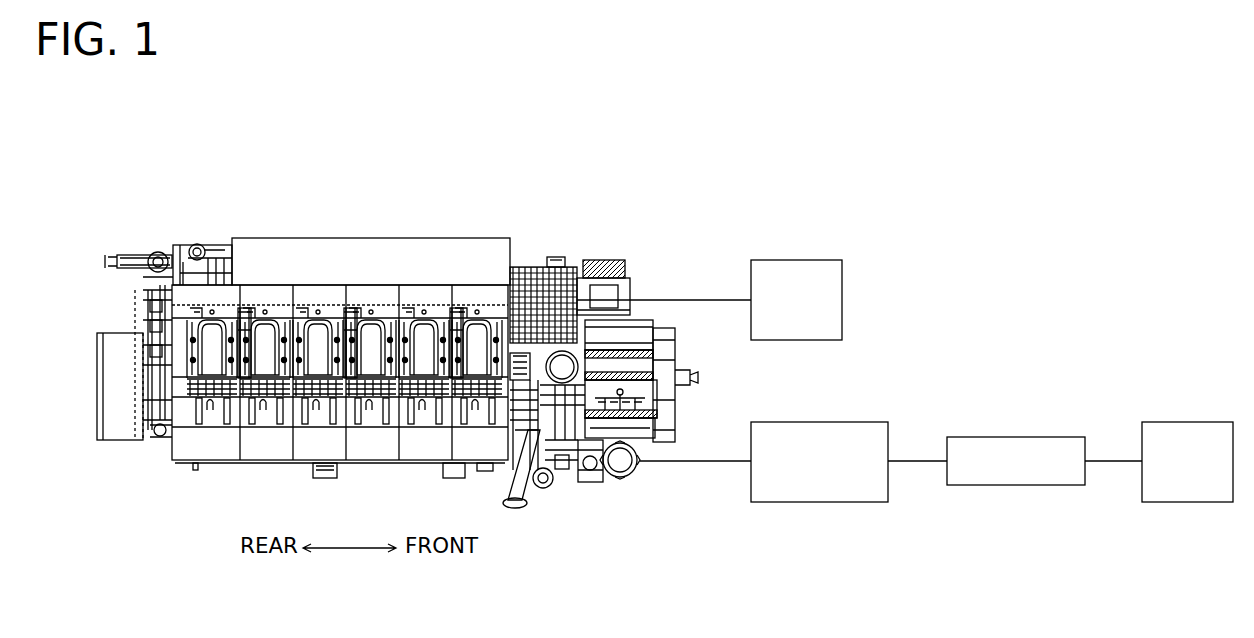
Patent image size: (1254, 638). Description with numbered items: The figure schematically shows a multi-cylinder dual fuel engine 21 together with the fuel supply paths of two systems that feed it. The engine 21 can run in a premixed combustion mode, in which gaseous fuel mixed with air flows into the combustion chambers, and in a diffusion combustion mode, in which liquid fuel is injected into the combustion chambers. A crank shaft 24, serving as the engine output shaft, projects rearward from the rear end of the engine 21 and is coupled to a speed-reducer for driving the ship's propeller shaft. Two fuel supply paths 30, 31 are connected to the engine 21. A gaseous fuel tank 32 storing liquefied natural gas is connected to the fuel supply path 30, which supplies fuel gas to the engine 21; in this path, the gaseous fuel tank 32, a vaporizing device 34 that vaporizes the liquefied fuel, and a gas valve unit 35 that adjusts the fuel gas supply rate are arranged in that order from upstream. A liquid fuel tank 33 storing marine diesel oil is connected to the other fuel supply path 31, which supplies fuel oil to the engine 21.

The engine 21 is at (382, 223).
The crank shaft 24 is at (143, 418).
The fuel supply path 30 is at (697, 462).
The fuel supply path 31 is at (690, 298).
The gaseous fuel tank 32 is at (1190, 503).
The liquid fuel tank 33 is at (794, 259).
The vaporizing device 34 is at (1016, 486).
The gas valve unit 35 is at (820, 503).